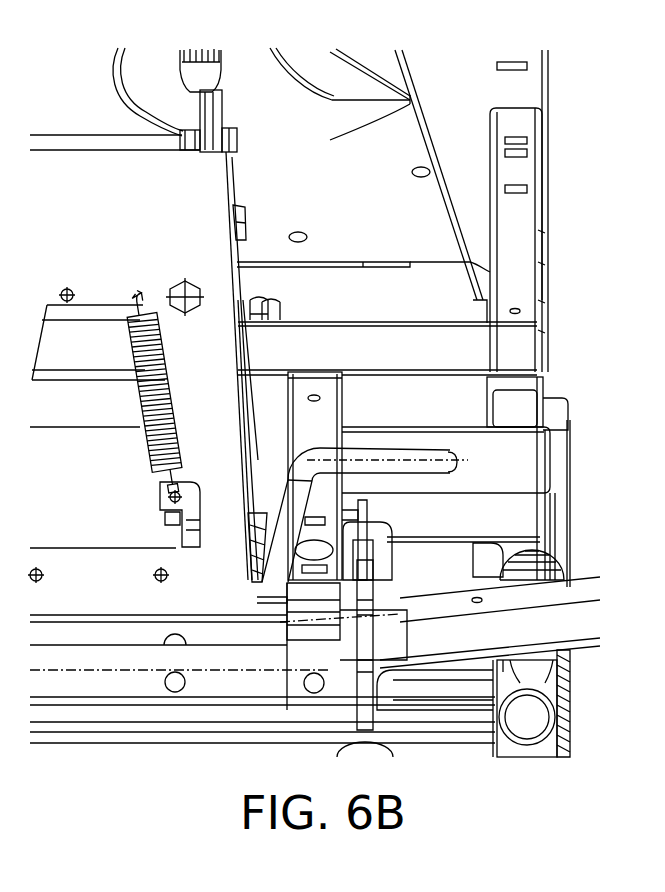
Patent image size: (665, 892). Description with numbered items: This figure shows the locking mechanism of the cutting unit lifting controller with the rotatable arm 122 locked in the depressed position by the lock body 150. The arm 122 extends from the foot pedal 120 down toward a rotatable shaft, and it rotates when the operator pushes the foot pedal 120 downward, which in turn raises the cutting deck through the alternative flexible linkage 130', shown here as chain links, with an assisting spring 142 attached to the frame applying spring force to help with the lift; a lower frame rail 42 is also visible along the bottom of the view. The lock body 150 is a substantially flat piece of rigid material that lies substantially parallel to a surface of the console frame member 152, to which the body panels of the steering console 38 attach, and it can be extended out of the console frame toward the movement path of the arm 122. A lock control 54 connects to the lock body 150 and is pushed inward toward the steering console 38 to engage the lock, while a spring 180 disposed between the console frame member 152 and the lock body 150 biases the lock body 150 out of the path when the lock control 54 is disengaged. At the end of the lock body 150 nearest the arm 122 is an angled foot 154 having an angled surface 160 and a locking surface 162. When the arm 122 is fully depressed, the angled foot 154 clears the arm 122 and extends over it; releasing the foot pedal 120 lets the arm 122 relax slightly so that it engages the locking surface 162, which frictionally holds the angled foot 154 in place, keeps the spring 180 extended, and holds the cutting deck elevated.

The steering console 38 is at (104, 125).
The console frame member 152 is at (97, 168).
The lock control 54 is at (236, 190).
The spring 180 is at (137, 370).
The angled foot 154 is at (268, 472).
The arm 122 is at (283, 493).
The lock body 150 is at (185, 503).
The locking surface 162 is at (263, 528).
The foot pedal 120 is at (415, 460).
The angled surface 160 is at (302, 517).
The alternative flexible linkage 130' is at (420, 543).
The assisting spring 142 is at (560, 687).
The lower rail 42 is at (247, 727).